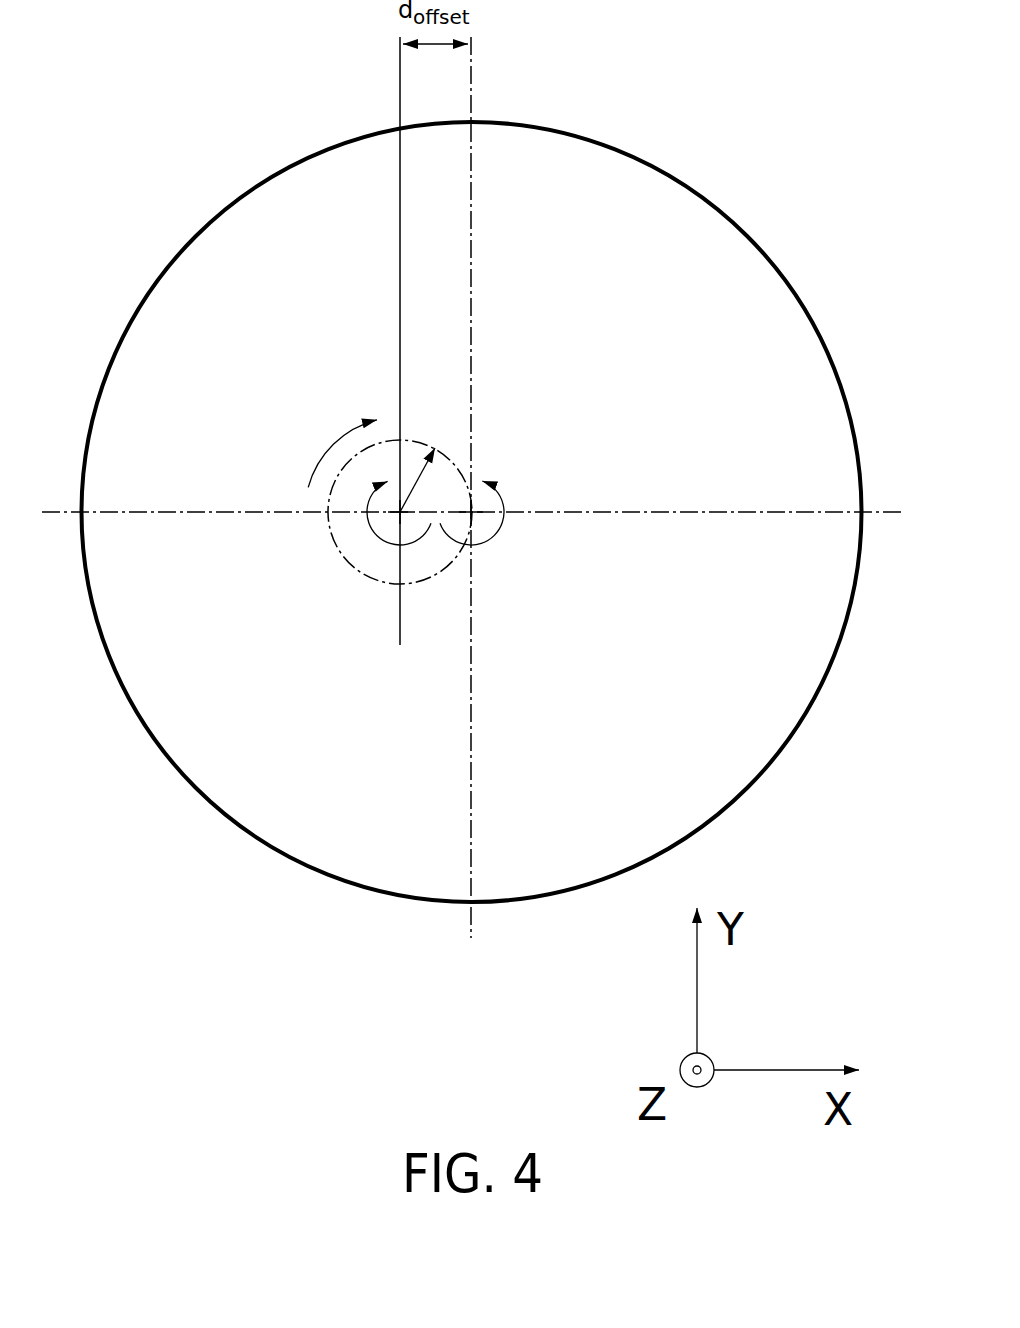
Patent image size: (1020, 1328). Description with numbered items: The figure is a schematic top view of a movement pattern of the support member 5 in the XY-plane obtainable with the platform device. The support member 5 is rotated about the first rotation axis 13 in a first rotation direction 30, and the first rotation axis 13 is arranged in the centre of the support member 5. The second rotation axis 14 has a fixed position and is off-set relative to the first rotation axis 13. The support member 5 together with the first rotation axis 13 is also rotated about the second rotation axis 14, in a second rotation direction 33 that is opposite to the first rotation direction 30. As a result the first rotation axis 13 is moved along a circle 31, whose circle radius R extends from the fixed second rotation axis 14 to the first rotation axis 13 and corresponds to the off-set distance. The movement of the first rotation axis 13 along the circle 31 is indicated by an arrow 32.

The support member 5 is at (657, 236).
The first rotation axis 13 is at (473, 520).
The second rotation axis 14 is at (398, 514).
The first rotation direction 30 is at (502, 525).
The circle 31 is at (383, 582).
The arrow 32 is at (327, 452).
The second rotation direction 33 is at (368, 523).
The circle radius R is at (423, 495).